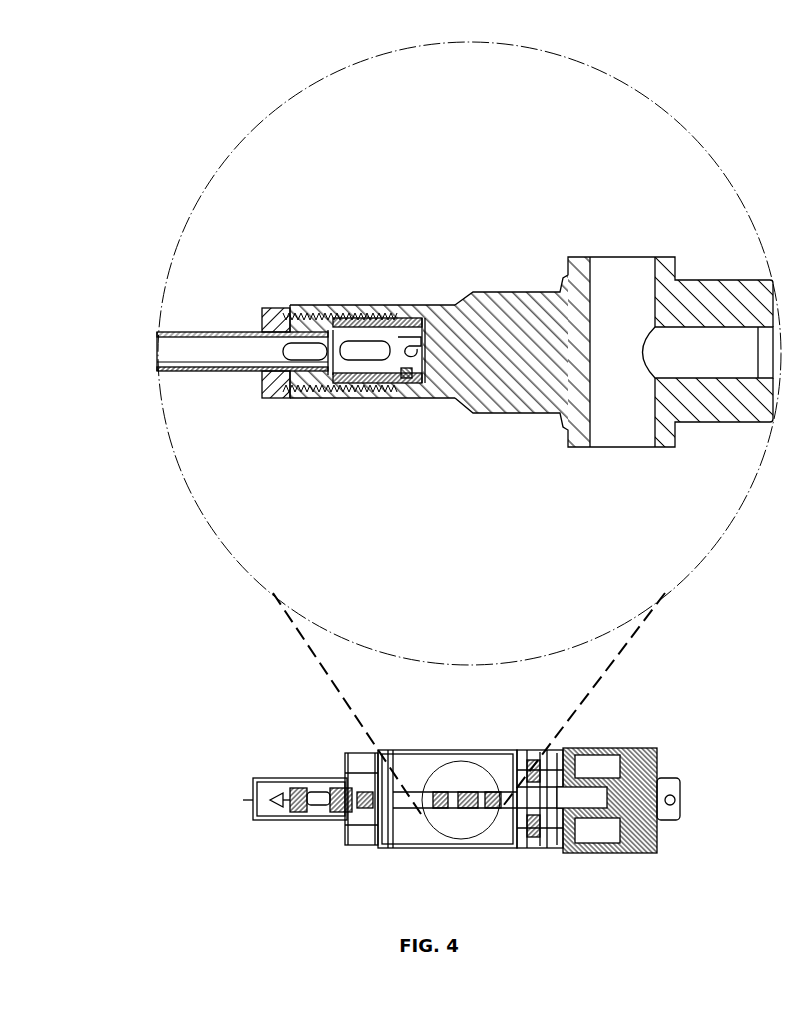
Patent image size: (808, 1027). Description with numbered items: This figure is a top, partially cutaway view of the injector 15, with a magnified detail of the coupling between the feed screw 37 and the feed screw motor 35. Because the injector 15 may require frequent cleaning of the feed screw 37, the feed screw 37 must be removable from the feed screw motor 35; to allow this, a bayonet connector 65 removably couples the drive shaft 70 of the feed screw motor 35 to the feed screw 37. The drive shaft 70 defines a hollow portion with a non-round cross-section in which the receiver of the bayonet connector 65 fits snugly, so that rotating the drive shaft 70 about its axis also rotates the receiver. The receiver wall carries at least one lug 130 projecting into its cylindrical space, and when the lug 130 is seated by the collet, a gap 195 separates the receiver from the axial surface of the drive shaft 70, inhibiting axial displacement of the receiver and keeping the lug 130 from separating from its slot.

The injector 15 is at (425, 853).
The feed screw motor 35 is at (586, 826).
The feed screw 37 is at (215, 383).
The bayonet connector 65 is at (337, 305).
The drive shaft 70 is at (519, 369).
The lug 130 is at (396, 398).
The gap 195 is at (420, 402).